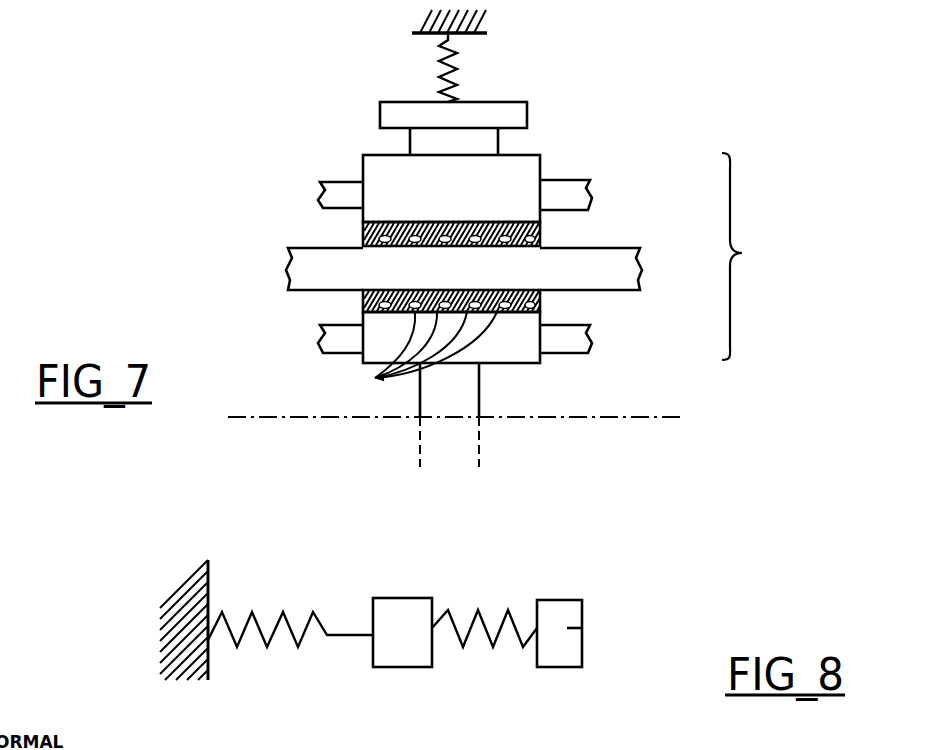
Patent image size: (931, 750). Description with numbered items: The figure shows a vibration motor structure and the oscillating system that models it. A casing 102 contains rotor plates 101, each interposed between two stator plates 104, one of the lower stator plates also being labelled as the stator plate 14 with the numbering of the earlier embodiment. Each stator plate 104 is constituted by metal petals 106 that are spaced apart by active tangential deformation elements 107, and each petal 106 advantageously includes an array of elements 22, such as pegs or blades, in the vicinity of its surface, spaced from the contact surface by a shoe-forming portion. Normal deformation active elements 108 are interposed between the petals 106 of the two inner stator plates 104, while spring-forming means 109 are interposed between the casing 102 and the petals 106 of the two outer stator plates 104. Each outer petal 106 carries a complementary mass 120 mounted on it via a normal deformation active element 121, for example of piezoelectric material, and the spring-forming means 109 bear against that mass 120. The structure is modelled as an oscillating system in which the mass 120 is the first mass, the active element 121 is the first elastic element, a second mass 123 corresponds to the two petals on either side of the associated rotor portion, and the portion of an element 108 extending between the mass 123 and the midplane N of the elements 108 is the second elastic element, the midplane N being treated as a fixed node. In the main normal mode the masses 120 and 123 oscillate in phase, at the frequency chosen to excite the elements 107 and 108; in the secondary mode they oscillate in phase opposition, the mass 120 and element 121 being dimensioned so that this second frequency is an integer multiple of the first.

In FIG. 7, the lower housing part 14 is at (368, 352).
In FIG. 7, the coil wires 22 is at (418, 362).
In FIG. 7, the rotor plate 101 is at (313, 273).
In FIG. 7, the casing 102 is at (427, 32).
In FIG. 7, the stator plate 104 is at (387, 175).
In FIG. 7, the petal 106 is at (346, 226).
In FIG. 7, the active tangential deformation element 107 is at (580, 192).
In FIG. 7, the normal deformation active element 108 is at (468, 393).
In FIG. 8, the normal deformation active element 108 is at (307, 645).
In FIG. 7, the spring-forming means 109 is at (433, 80).
In FIG. 7, the complementary mass 120 is at (507, 107).
In FIG. 8, the complementary mass 120 is at (578, 628).
In FIG. 7, the normal deformation active element 121 is at (498, 140).
In FIG. 8, the normal deformation active element 121 is at (485, 612).
In FIG. 7, the second mass 123 is at (758, 256).
In FIG. 8, the second mass 123 is at (412, 667).
In FIG. 7, the midplane N is at (249, 418).
In FIG. 8, the midplane N is at (192, 590).